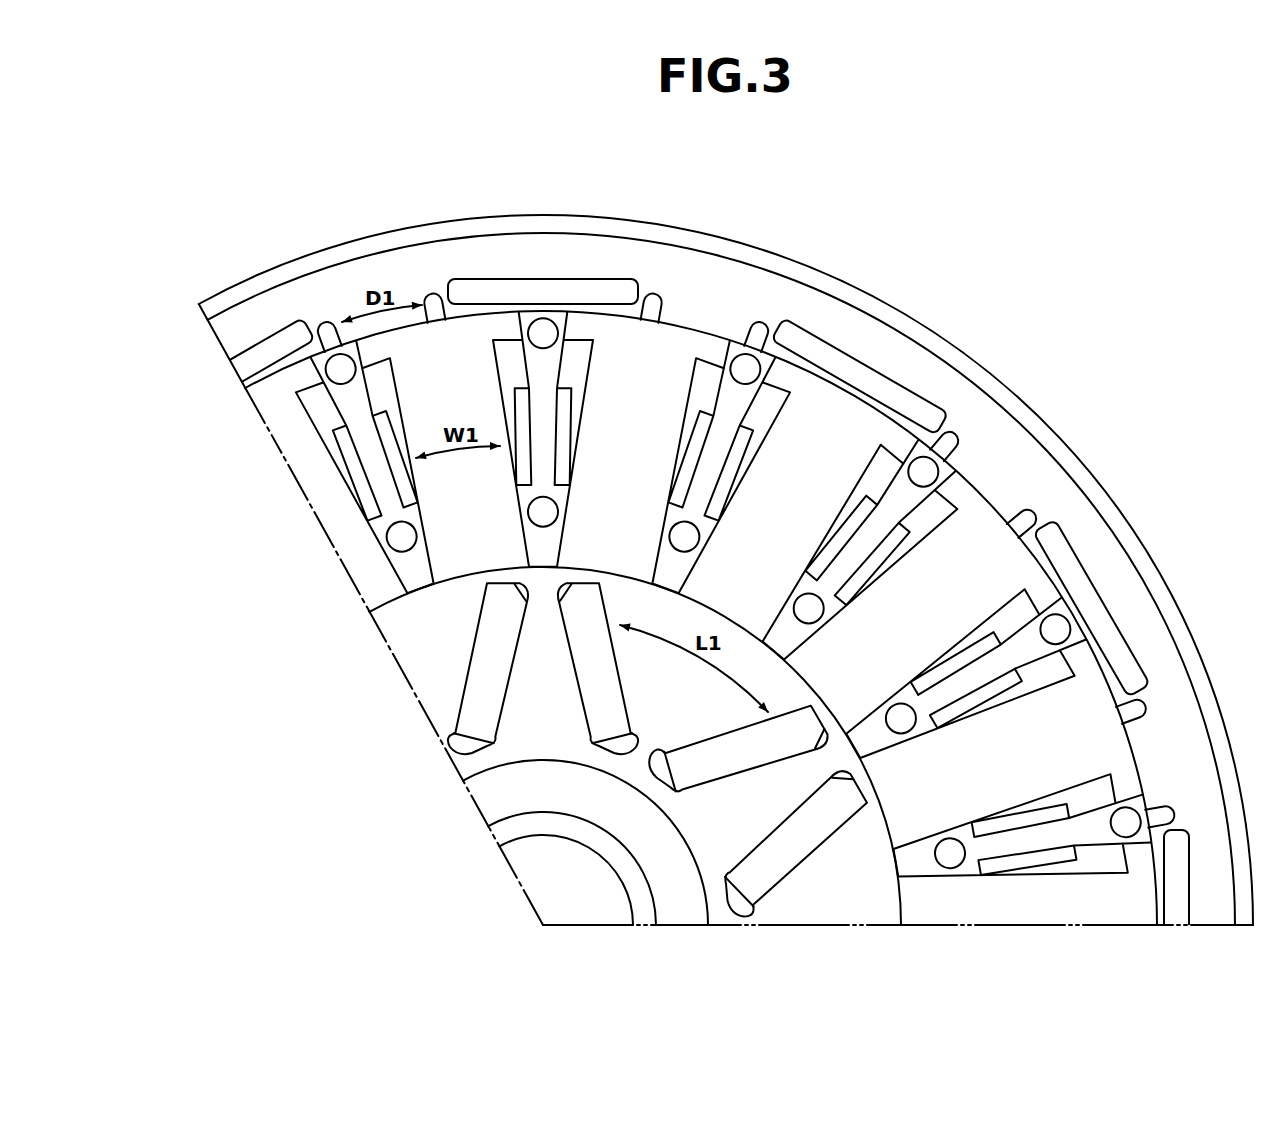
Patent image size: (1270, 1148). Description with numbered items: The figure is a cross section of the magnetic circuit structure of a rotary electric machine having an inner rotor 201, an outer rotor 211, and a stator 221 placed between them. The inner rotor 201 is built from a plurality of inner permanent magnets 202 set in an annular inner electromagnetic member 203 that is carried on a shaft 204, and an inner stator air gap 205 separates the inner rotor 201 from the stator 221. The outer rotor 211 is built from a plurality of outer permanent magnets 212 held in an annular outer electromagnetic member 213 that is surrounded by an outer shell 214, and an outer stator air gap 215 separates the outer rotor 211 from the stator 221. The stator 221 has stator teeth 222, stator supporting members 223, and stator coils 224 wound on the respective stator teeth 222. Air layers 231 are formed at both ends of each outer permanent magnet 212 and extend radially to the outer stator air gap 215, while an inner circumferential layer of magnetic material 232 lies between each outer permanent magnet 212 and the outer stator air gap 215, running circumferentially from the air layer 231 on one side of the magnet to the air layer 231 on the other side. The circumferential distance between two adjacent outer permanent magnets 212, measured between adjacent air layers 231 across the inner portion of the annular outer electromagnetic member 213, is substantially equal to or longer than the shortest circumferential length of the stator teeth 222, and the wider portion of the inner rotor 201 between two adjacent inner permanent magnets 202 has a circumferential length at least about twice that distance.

The inner rotor 201 is at (430, 646).
The inner permanent magnets 202 is at (478, 690).
The annular inner electromagnetic member 203 is at (468, 799).
The shaft 204 is at (490, 830).
The inner stator air gap 205 is at (378, 604).
The outer rotor 211 is at (222, 352).
The outer permanent magnets 212 is at (272, 343).
The annular outer electromagnetic member 213 is at (402, 265).
The outer shell 214 is at (230, 336).
The outer stator air gap 215 is at (247, 386).
The stator 221 is at (329, 491).
The stator teeth 222 is at (975, 540).
The stator supporting members 223 is at (795, 601).
The stator coils 224 is at (872, 450).
The air layers 231 is at (765, 320).
The inner circumferential layer of magnetic material 232 is at (611, 305).